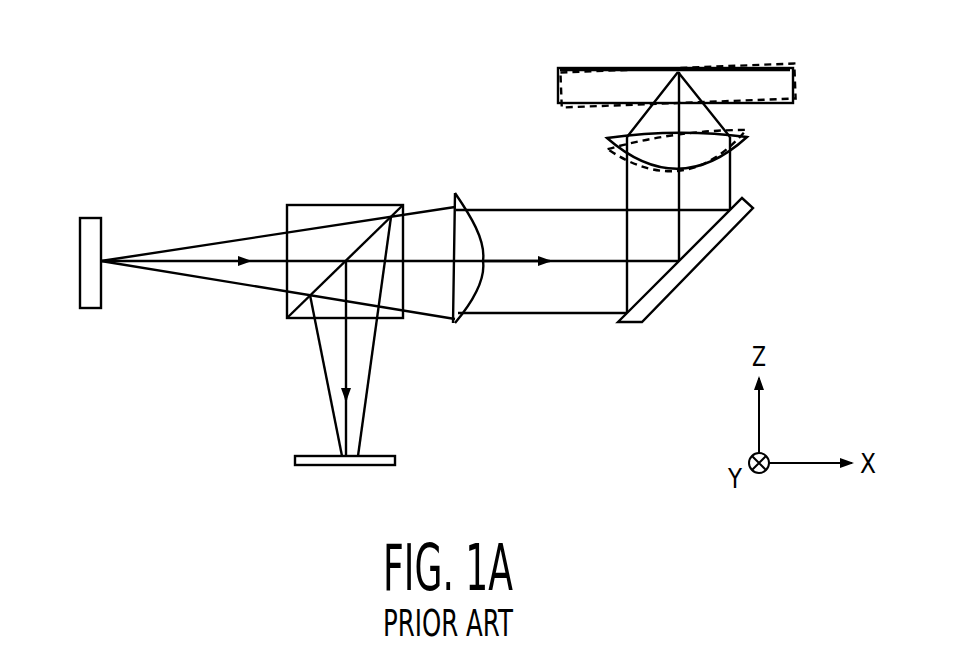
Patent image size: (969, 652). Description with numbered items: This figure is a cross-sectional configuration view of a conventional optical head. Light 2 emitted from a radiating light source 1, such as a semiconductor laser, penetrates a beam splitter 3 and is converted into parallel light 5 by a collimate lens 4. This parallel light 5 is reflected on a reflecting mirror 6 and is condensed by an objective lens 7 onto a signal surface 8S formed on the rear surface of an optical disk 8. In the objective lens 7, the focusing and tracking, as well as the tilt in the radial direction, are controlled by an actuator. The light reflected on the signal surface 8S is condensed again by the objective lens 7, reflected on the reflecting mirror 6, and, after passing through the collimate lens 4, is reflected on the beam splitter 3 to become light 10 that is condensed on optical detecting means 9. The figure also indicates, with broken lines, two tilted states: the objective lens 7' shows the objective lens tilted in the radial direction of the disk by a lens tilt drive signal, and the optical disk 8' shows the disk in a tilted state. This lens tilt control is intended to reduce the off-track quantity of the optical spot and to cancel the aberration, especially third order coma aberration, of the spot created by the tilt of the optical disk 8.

The radiating light source 1 is at (92, 216).
The light 2 is at (201, 258).
The beam splitter 3 is at (338, 212).
The collimate lens 4 is at (453, 192).
The parallel light 5 is at (502, 258).
The reflecting mirror 6 is at (630, 325).
The objective lens 7 is at (705, 153).
The objective lens (tilted state) 7' is at (715, 153).
The optical disk 8 is at (689, 105).
The optical disk (tilted state) 8' is at (681, 56).
The signal surface 8S is at (712, 74).
The optical detecting means 9 is at (390, 456).
The light 10 is at (349, 366).